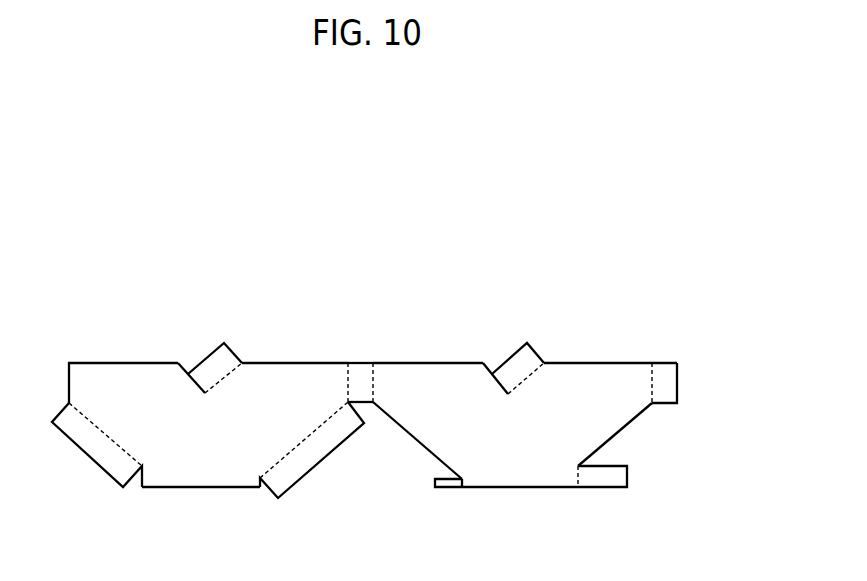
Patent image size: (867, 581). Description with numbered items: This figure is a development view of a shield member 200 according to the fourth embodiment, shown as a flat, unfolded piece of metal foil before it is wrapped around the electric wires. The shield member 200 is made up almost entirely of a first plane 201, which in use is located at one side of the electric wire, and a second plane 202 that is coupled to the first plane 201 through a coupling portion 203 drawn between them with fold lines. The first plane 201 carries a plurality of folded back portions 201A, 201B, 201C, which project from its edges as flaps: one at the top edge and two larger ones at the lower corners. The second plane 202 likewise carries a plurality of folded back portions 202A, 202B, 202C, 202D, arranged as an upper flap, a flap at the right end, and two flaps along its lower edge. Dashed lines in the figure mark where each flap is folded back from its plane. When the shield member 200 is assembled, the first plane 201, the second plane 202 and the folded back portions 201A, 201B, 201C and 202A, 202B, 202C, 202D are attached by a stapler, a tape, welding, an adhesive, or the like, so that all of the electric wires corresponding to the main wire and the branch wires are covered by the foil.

The shield member 200 is at (427, 238).
The first plane 201 is at (275, 373).
The folded back portion 201A is at (210, 365).
The folded back portion 201B is at (303, 467).
The folded back portion 201C is at (118, 467).
The second plane 202 is at (592, 373).
The folded back portion 202A is at (513, 365).
The folded back portion 202B is at (670, 385).
The folded back portion 202C is at (606, 480).
The folded back portion 202D is at (452, 480).
The coupling portion 203 is at (357, 373).